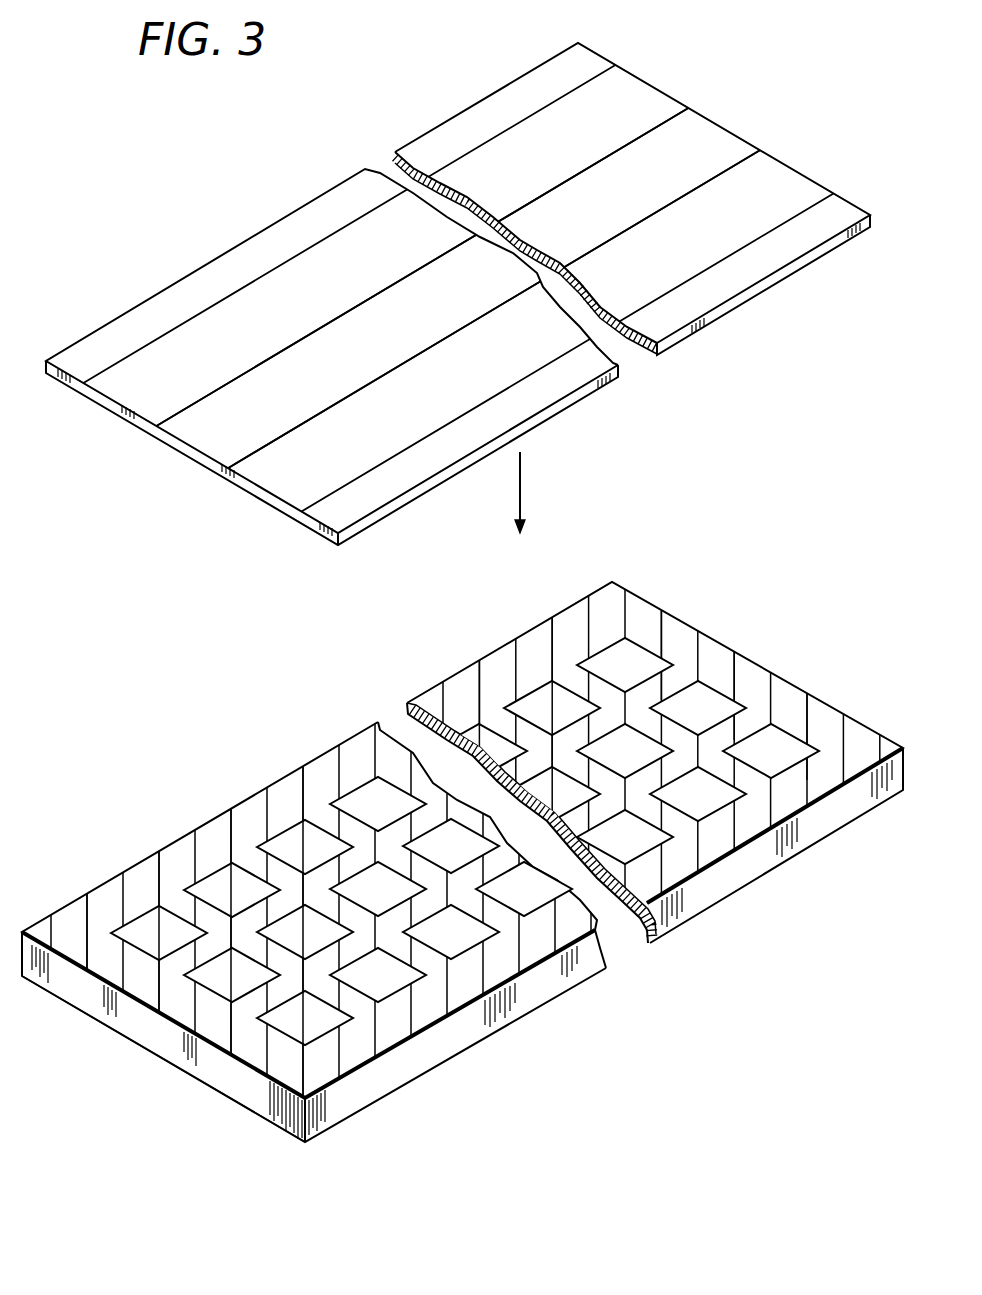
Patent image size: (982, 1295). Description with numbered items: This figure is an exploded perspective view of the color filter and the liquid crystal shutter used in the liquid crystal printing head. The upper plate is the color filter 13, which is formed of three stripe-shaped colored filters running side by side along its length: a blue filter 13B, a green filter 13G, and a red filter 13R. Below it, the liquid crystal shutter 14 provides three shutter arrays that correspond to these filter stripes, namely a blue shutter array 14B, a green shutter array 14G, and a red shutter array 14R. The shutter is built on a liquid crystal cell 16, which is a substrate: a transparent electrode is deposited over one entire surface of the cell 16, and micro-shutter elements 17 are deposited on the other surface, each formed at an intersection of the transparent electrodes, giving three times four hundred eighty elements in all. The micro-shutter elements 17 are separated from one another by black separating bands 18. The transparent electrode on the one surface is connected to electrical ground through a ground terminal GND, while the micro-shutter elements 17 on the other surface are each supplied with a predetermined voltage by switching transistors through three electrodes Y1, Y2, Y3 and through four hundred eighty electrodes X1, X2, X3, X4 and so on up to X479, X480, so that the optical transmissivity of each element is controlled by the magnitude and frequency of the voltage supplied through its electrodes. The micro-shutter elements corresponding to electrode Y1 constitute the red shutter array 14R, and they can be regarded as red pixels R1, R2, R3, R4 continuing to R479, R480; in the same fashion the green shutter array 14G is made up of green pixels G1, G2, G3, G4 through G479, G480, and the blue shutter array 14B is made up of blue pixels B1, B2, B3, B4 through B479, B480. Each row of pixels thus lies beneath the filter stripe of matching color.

The color filter 13 is at (458, 294).
The blue filter 13B is at (660, 98).
The green filter 13G is at (726, 138).
The red filter 13R is at (793, 173).
The liquid crystal shutter 14 is at (462, 850).
The blue shutter array 14B is at (698, 578).
The green shutter array 14G is at (762, 648).
The red shutter array 14R is at (833, 694).
The liquid crystal cell 16 is at (518, 1011).
The micro-shutter element 17 is at (331, 1063).
The black separating band 18 is at (418, 1031).
The electrode X1 is at (108, 905).
The electrode X2 is at (182, 855).
The electrode X3 is at (255, 812).
The electrode X4 is at (333, 765).
The electrode X479 is at (490, 672).
The electrode X480 is at (572, 627).
The electrode Y1 is at (241, 1062).
The electrode Y2 is at (167, 1019).
The electrode Y3 is at (97, 974).
The ground terminal GND is at (292, 1127).
The blue pixel B1 is at (159, 933).
The blue pixel B2 is at (232, 890).
The blue pixel B3 is at (305, 847).
The blue pixel B4 is at (378, 804).
The green pixel G1 is at (232, 975).
The green pixel G2 is at (305, 932).
The green pixel G3 is at (378, 889).
The green pixel G4 is at (451, 846).
The red pixel R1 is at (305, 1018).
The red pixel R2 is at (378, 975).
The red pixel R3 is at (451, 932).
The red pixel R4 is at (524, 889).
The blue pixel B479 is at (552, 708).
The blue pixel B480 is at (625, 665).
The green pixel G479 is at (625, 751).
The green pixel G480 is at (698, 708).
The red pixel R479 is at (698, 794).
The red pixel R480 is at (771, 751).